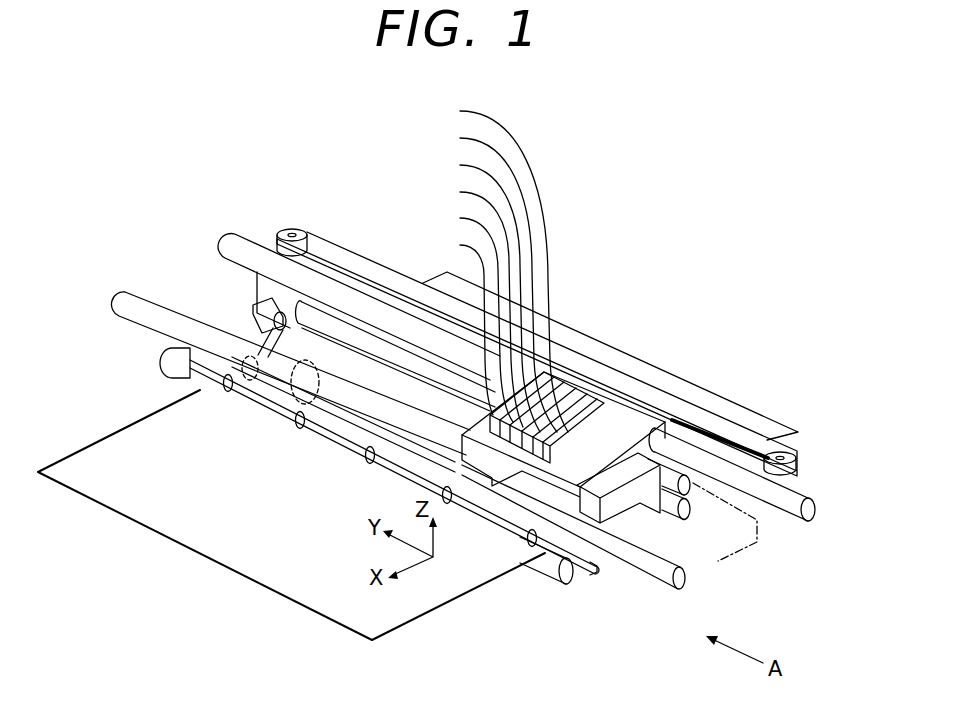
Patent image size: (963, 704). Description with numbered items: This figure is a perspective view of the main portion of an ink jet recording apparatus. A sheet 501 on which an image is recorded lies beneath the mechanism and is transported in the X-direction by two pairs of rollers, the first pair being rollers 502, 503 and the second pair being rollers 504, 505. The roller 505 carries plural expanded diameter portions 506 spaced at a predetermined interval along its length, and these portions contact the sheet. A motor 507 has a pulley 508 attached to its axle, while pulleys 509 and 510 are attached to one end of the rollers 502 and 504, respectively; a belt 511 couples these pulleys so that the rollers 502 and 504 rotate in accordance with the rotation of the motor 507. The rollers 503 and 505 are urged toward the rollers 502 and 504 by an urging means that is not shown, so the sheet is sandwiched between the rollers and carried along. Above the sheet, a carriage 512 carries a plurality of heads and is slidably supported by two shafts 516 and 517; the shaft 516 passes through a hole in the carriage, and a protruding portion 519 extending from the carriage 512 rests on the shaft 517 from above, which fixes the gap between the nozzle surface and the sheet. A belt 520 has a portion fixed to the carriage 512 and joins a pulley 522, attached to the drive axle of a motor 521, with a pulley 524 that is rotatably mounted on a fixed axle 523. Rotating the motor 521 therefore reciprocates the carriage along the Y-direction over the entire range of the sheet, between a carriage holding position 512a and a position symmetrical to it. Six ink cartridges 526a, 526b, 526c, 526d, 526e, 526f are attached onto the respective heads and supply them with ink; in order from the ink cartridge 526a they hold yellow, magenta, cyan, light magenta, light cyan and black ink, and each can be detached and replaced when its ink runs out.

The sheet 501 is at (173, 526).
The roller 502 is at (690, 517).
The roller 503 is at (700, 493).
The roller 504 is at (566, 585).
The roller 505 is at (594, 572).
The expanded diameter portions 506 is at (531, 548).
The motor 507 is at (320, 378).
The pulley 508 is at (247, 382).
The pulley 509 is at (258, 310).
The pulley 510 is at (170, 377).
The belt 511 is at (160, 357).
The carriage 512 is at (680, 415).
The carriage holding position 512a is at (738, 524).
The shaft 516 is at (241, 242).
The shaft 517 is at (147, 314).
The protruding portion 519 is at (482, 478).
The belt 520 is at (340, 246).
The motor 521 is at (263, 283).
The pulley 522 is at (291, 228).
The fixed axle 523 is at (795, 457).
The pulley 524 is at (767, 440).
The ink cartridge 526a is at (508, 280).
The ink cartridge 526b is at (485, 278).
The ink cartridge 526c is at (476, 291).
The ink cartridge 526d is at (468, 302).
The ink cartridge 526e is at (463, 312).
The ink cartridge 526f is at (453, 322).